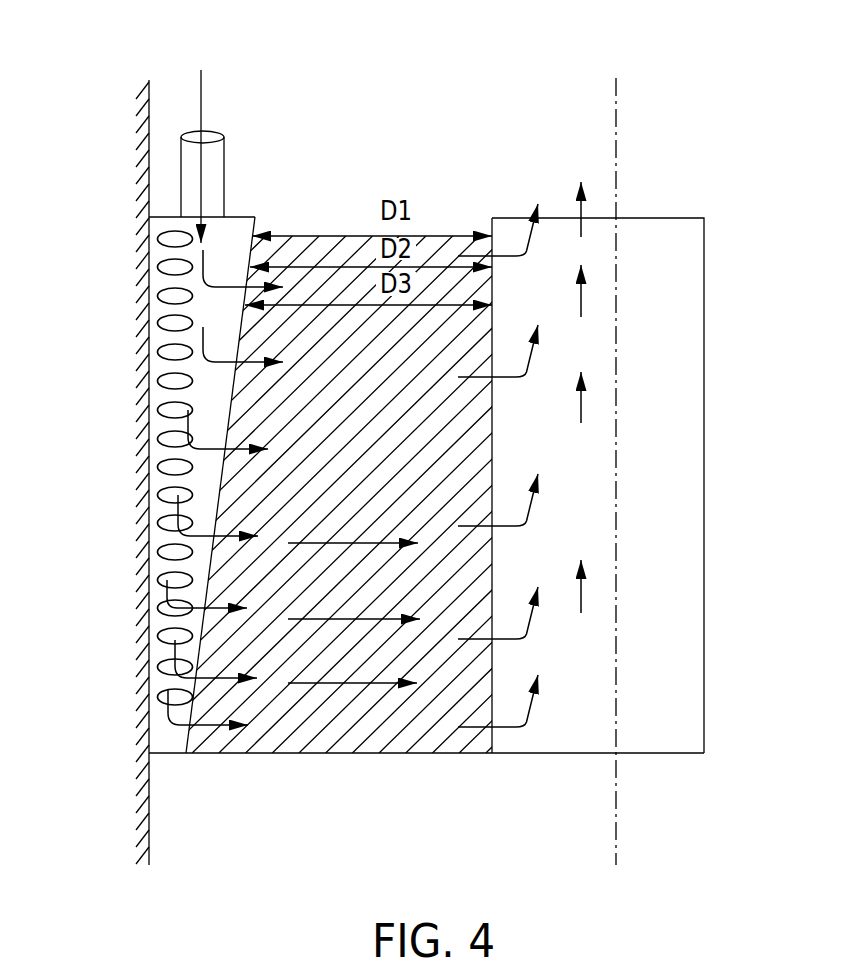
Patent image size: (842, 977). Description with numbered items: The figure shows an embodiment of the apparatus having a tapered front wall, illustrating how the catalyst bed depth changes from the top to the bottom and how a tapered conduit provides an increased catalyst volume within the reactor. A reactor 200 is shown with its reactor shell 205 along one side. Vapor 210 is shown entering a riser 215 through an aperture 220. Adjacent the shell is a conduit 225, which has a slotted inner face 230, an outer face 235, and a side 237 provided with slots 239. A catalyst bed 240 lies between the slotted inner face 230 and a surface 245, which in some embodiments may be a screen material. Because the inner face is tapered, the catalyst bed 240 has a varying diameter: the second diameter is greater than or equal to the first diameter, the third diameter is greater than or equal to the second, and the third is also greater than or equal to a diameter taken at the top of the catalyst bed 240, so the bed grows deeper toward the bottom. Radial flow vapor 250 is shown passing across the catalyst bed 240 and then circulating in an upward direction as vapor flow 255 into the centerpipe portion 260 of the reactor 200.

The reactor 200 is at (148, 724).
The reactor shell 205 is at (147, 82).
The vapor 210 is at (225, 131).
The riser 215 is at (225, 170).
The aperture 220 is at (220, 138).
The conduit 225 is at (173, 483).
The slotted inner face 230 is at (242, 337).
The outer face 235 is at (150, 407).
The side 237 is at (188, 313).
The slots 239 is at (177, 268).
The catalyst bed 240 is at (332, 647).
The surface 245 is at (493, 428).
The radial flow vapor 250 is at (390, 622).
The vapor flow 255 is at (528, 707).
The centerpipe portion 260 is at (705, 462).